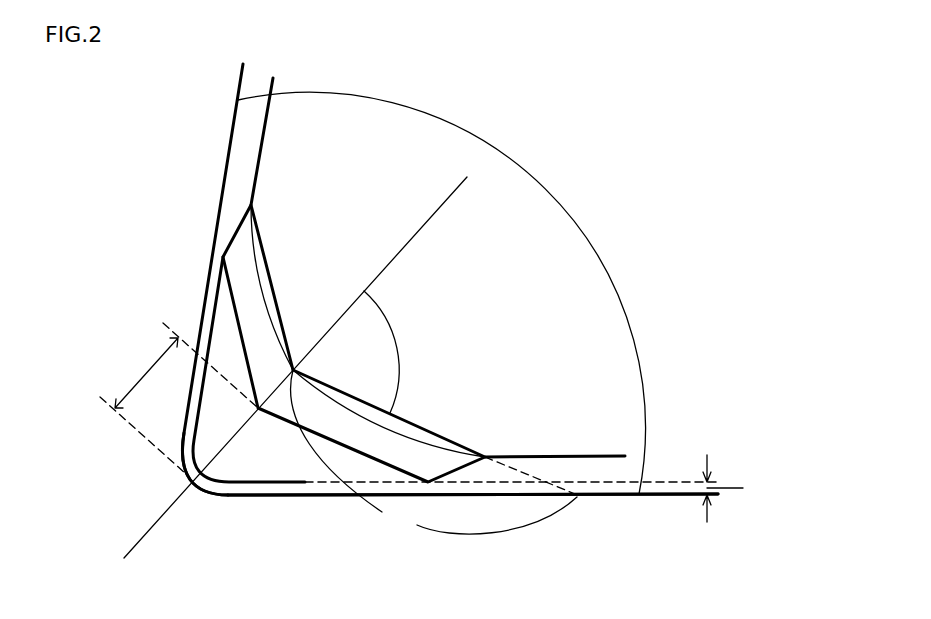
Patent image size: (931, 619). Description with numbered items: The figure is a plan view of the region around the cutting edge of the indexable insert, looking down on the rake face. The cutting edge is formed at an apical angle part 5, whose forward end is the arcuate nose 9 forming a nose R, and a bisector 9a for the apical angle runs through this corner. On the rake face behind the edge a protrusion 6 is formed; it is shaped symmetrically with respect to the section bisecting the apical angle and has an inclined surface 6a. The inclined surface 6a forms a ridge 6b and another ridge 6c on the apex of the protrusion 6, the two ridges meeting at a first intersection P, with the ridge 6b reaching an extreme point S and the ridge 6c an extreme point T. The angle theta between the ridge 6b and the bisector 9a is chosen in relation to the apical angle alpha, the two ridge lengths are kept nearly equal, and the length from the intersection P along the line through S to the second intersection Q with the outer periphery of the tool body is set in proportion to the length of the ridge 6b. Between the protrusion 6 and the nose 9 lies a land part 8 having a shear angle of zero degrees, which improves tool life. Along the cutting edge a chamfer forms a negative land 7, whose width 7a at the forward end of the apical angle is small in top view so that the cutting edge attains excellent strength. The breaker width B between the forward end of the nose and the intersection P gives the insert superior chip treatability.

The apical angle part 5 is at (639, 496).
The protrusion 6 is at (424, 343).
The inclined surface 6a is at (411, 432).
The ridge 6b is at (363, 400).
The ridge 6c is at (270, 278).
The negative land 7 is at (612, 492).
The width of negative land 7a is at (739, 488).
The land part 8 is at (270, 467).
The nose 9 is at (196, 486).
The bisector for apical angle 9a is at (341, 317).